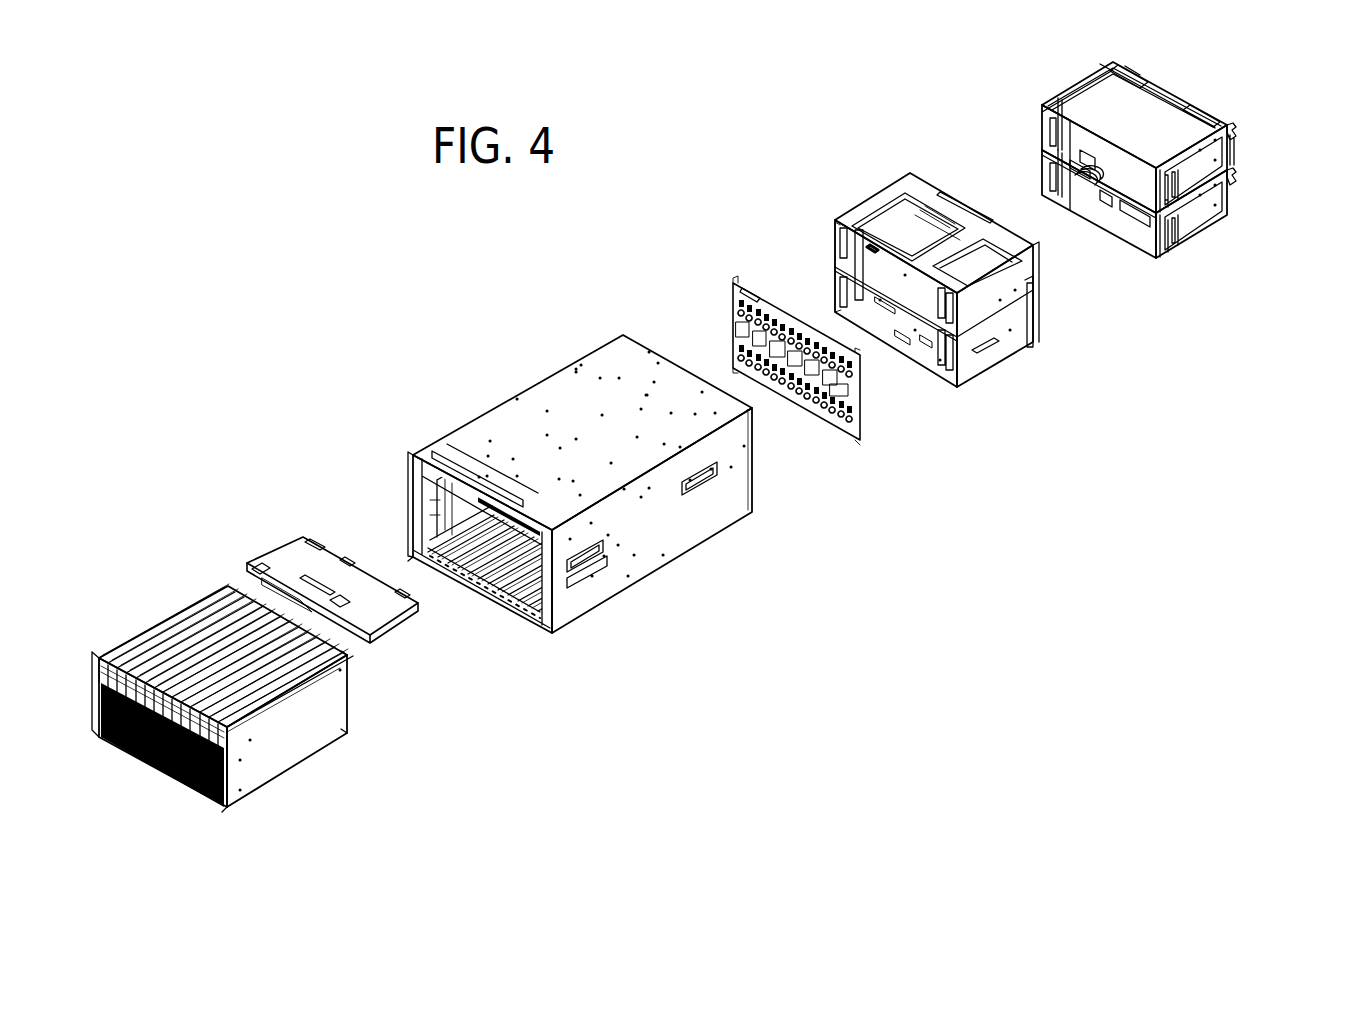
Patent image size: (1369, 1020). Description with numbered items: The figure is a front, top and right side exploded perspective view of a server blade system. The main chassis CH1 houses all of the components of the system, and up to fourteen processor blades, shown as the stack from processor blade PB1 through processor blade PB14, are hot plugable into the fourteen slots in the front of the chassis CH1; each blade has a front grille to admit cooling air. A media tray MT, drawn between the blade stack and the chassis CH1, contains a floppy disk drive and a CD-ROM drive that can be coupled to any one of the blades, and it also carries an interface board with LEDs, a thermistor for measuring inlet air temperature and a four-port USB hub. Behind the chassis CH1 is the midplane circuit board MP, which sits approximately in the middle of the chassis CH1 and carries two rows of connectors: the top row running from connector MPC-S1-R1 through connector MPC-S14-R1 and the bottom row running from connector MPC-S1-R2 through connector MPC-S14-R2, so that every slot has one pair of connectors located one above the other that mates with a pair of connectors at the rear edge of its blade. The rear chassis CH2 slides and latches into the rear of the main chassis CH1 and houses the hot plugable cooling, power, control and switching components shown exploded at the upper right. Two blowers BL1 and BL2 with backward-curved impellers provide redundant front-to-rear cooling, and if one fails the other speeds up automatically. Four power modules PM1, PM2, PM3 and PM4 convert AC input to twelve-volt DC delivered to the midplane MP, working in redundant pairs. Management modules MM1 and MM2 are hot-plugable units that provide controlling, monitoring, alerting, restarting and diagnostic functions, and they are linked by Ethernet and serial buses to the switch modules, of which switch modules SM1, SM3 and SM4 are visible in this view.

The processor blade PB1 is at (170, 620).
The processor blade PB14 is at (268, 755).
The media tray MT is at (280, 545).
The main chassis CH1 is at (495, 410).
The midplane circuit board MP is at (741, 283).
The midplane connector MPC-S1-R1 is at (727, 300).
The midplane connector MPC-S1-R2 is at (727, 347).
The midplane connector MPC-S14-R1 is at (860, 380).
The midplane connector MPC-S14-R2 is at (862, 427).
The chassis CH2 is at (870, 195).
The management module MM1 is at (1115, 62).
The management module MM2 is at (1046, 142).
The power module PM1 is at (1135, 72).
The power module PM2 is at (1046, 198).
The power module PM3 is at (1210, 120).
The power module PM4 is at (1124, 232).
The blower BL1 is at (1173, 100).
The blower BL2 is at (1087, 207).
The switch module SM1 is at (1240, 130).
The switch module SM3 is at (1243, 152).
The switch module SM4 is at (1214, 216).